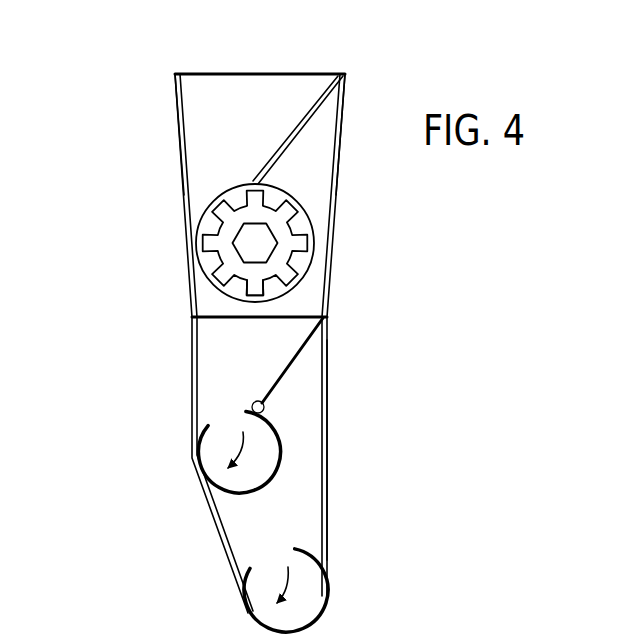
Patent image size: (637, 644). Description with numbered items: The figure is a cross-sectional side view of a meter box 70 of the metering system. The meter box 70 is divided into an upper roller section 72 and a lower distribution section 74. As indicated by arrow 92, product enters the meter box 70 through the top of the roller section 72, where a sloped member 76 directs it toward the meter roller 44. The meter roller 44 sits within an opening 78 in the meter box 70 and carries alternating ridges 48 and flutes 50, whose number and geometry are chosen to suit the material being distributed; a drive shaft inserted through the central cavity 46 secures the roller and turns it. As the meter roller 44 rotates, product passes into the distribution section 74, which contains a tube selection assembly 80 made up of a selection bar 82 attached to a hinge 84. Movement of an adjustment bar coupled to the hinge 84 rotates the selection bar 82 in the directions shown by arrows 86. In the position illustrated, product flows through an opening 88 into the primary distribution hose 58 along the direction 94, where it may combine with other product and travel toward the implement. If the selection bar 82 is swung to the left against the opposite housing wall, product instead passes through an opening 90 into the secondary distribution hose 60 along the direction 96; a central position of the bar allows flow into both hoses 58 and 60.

The meter box 70 is at (115, 122).
The arrow 92 is at (300, 65).
The sloped member 76 is at (300, 134).
The roller section 72 is at (337, 157).
The distribution section 74 is at (325, 448).
The opening 78 is at (212, 210).
The flutes 50 is at (268, 243).
The ridges 48 is at (303, 242).
The cavity 46 is at (247, 248).
The meter roller 44 is at (285, 262).
The tube selection assembly 80 is at (233, 347).
The selection bar 82 is at (295, 360).
The hinge 84 is at (266, 409).
The arrows 86 is at (303, 327).
The opening 88 is at (225, 418).
The primary distribution hose 58 is at (200, 467).
The direction 94 is at (273, 472).
The opening 90 is at (273, 558).
The secondary distribution hose 60 is at (252, 612).
The direction 96 is at (327, 595).